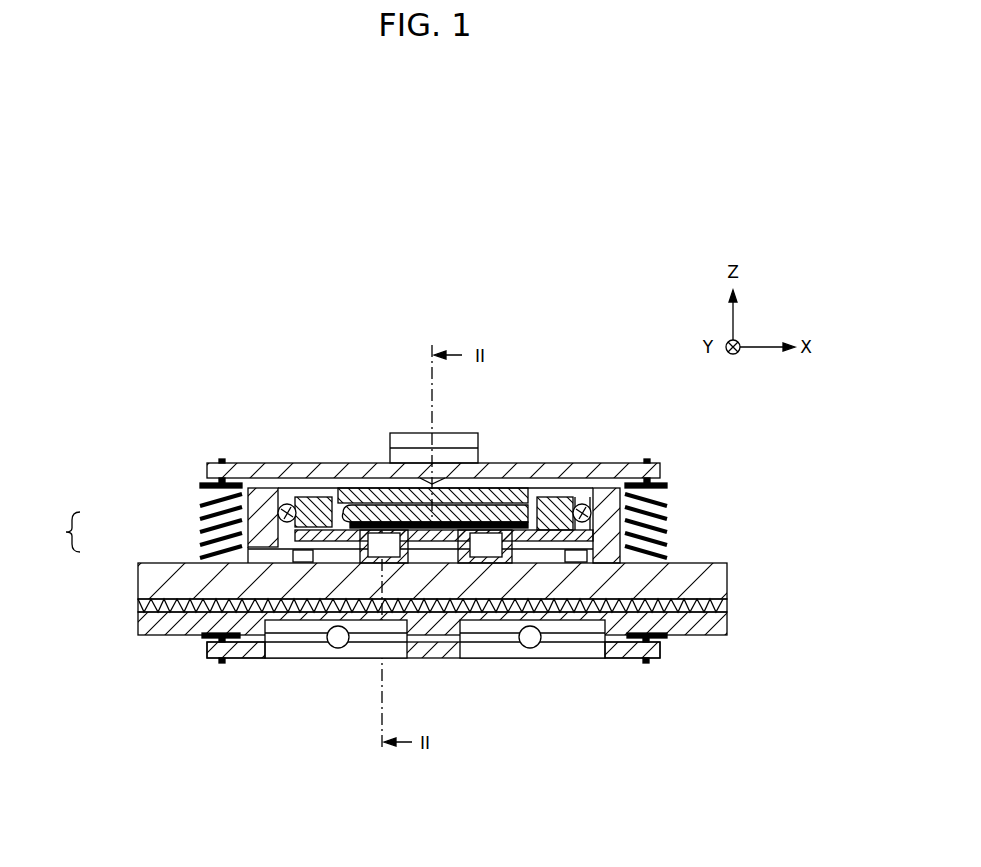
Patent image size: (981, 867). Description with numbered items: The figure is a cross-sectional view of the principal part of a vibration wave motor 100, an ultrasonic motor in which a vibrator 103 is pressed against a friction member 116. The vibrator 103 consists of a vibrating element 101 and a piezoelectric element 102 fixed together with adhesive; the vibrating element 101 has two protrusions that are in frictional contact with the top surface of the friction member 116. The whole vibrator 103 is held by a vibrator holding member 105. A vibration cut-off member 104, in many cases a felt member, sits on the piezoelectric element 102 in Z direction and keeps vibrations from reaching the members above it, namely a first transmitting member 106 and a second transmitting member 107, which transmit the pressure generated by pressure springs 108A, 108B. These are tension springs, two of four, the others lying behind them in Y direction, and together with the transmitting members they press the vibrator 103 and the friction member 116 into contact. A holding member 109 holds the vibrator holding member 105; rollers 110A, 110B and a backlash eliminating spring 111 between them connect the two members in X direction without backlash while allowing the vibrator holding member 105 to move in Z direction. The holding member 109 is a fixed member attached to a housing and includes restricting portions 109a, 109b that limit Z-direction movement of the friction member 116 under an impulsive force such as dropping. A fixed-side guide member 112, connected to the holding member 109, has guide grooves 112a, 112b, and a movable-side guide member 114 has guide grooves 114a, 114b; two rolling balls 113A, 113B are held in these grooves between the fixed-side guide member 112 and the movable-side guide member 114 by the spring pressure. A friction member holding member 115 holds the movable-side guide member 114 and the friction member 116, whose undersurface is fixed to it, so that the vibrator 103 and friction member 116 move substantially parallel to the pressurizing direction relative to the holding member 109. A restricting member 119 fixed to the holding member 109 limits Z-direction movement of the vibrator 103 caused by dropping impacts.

The vibration wave motor 100 is at (102, 349).
The vibrating element 101 is at (248, 546).
The piezoelectric element 102 is at (248, 523).
The vibrator 103 is at (56, 532).
The vibration cut-off member 104 is at (555, 500).
The vibrator holding member 105 is at (583, 495).
The first transmitting member 106 is at (508, 513).
The second transmitting member 107 is at (237, 462).
The pressure spring 108A is at (200, 500).
The pressure spring 108B is at (667, 532).
The holding member 109 is at (625, 505).
The restricting portion 109a is at (298, 552).
The restricting portion 109b is at (572, 557).
The roller 110A is at (286, 503).
The roller 110B is at (588, 508).
The backlash eliminating spring 111 is at (605, 500).
The fixed-side guide member 112 is at (632, 648).
The guide groove 112a is at (277, 652).
The guide groove 112b is at (583, 650).
The rolling ball 113A is at (337, 637).
The rolling ball 113B is at (532, 638).
The movable-side guide member 114 is at (713, 628).
The guide groove 114a is at (305, 627).
The guide groove 114b is at (478, 627).
The friction member holding member 115 is at (713, 603).
The friction member 116 is at (713, 575).
The restricting member 119 is at (401, 433).